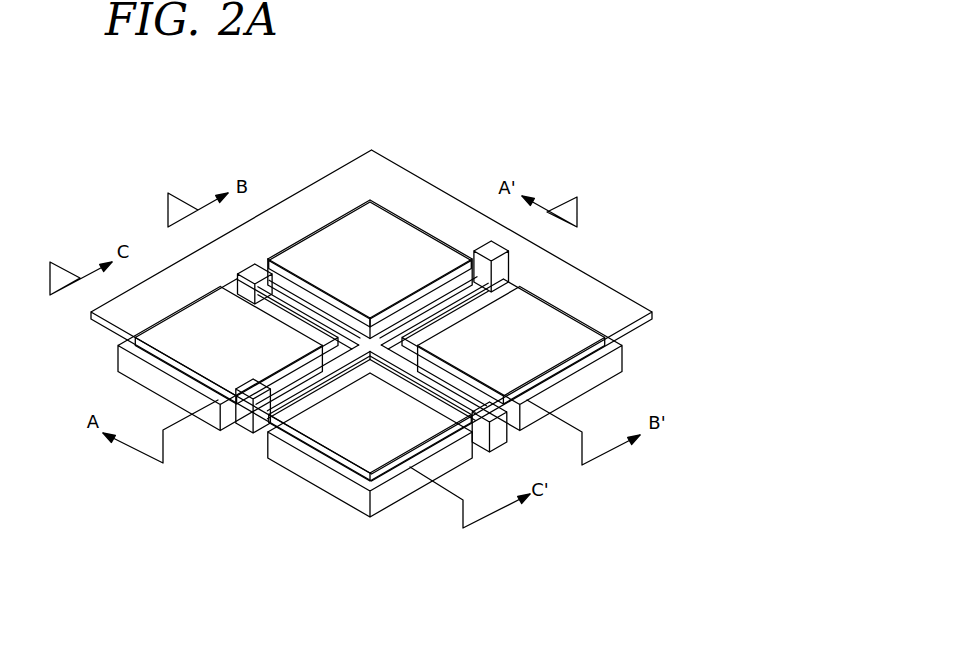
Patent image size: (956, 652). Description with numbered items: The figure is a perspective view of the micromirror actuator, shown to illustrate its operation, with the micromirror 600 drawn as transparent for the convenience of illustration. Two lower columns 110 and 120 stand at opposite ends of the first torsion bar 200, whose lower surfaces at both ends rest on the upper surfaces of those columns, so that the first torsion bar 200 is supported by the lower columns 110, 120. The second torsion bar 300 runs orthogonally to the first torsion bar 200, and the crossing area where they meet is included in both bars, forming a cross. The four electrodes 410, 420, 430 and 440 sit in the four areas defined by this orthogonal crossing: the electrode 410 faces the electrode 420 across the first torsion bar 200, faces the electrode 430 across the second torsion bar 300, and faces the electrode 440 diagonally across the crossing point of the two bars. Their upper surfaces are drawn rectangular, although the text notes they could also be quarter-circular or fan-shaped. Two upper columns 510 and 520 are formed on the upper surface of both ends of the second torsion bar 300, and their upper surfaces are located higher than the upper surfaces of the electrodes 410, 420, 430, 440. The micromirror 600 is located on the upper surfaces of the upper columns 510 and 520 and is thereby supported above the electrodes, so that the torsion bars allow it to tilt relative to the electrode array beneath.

The lower column 110 is at (505, 432).
The lower column 120 is at (235, 292).
The first torsion bar 200 is at (272, 275).
The second torsion bar 300 is at (292, 392).
The electrode 410 is at (386, 506).
The electrode 420 is at (625, 357).
The electrode 430 is at (118, 358).
The electrode 440 is at (352, 228).
The upper column 510 is at (250, 420).
The upper column 520 is at (486, 250).
The micromirror 600 is at (600, 284).